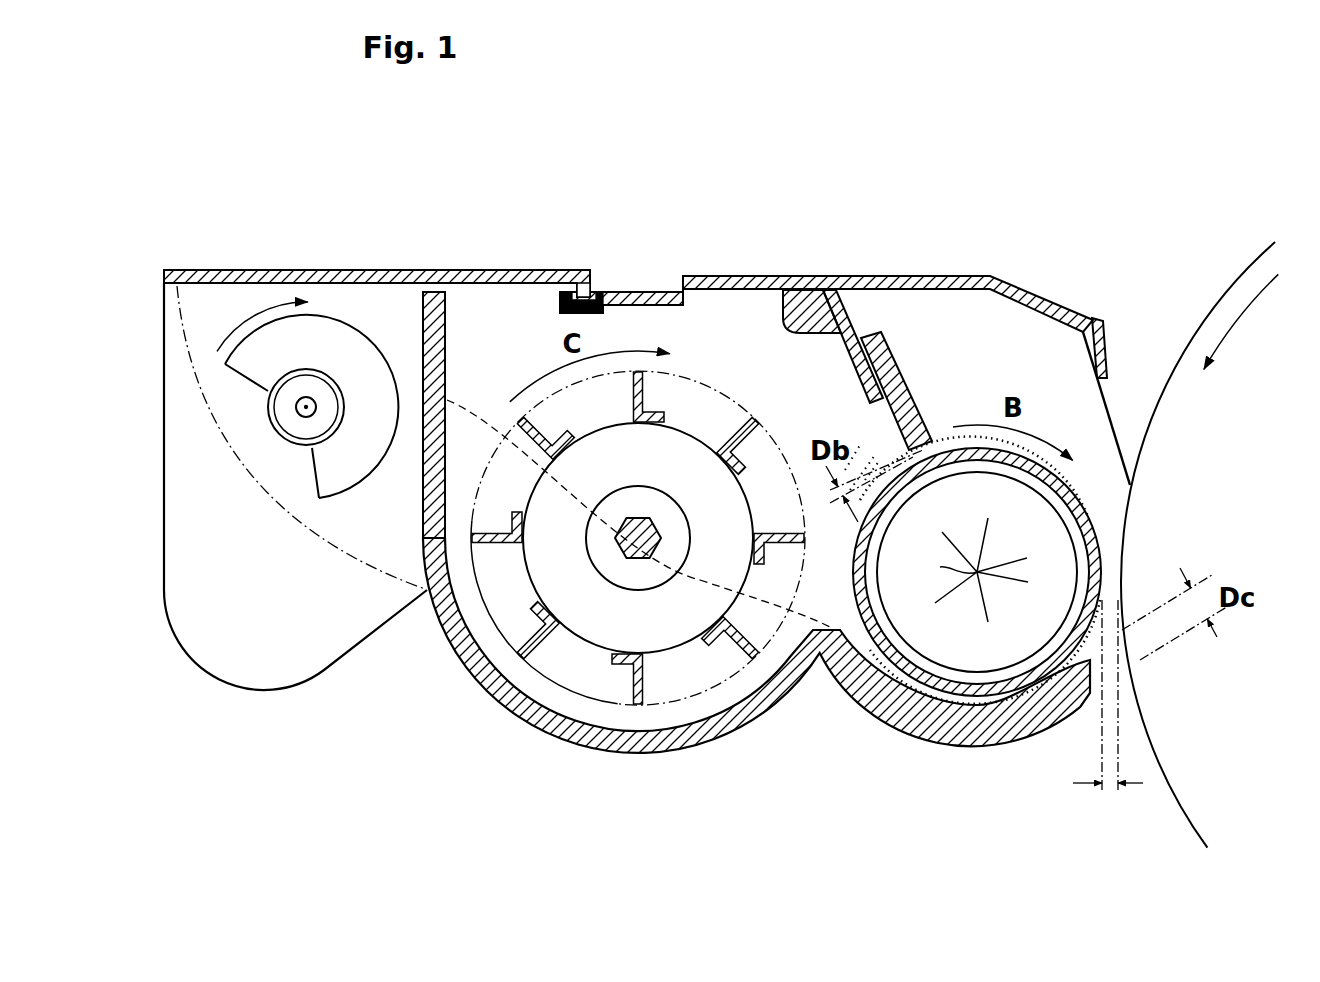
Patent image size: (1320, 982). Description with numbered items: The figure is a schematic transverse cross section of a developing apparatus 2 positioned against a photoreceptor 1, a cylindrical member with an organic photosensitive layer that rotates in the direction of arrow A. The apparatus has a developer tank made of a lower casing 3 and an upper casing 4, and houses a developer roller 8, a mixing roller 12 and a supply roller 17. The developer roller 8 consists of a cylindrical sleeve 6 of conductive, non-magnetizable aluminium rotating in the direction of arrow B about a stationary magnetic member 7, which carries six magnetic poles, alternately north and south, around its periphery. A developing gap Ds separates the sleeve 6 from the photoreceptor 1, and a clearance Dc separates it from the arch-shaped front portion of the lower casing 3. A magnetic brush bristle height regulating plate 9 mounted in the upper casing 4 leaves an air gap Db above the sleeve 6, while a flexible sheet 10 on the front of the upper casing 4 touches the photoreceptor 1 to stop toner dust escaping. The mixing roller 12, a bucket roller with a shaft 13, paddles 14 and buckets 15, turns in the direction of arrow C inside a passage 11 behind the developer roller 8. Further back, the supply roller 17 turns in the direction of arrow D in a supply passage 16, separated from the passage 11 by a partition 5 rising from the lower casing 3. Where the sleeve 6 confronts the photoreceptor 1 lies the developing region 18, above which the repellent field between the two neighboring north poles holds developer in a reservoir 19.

The photoreceptor 1 is at (1245, 270).
The developing apparatus 2 is at (616, 205).
The lower casing 3 is at (717, 722).
The upper casing 4 is at (425, 272).
The partition 5 is at (435, 333).
The sleeve 6 is at (965, 688).
The magnetic member 7 is at (947, 650).
The developer roller 8 is at (977, 674).
The magnetic brush bristle height regulating plate 9 is at (885, 357).
The flexible sheet 10 is at (1123, 437).
The passage 11 is at (582, 713).
The mixing roller 12 is at (490, 617).
The shaft 13 is at (627, 553).
The paddles 14 is at (662, 463).
The buckets 15 is at (757, 440).
The supply passage 16 is at (375, 322).
The supply roller 17 is at (327, 482).
The developing region 18 is at (1107, 567).
The reservoir 19 is at (1105, 525).